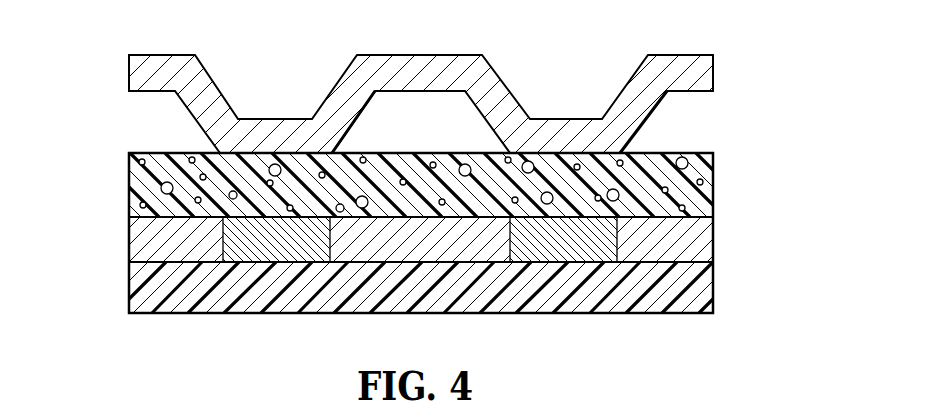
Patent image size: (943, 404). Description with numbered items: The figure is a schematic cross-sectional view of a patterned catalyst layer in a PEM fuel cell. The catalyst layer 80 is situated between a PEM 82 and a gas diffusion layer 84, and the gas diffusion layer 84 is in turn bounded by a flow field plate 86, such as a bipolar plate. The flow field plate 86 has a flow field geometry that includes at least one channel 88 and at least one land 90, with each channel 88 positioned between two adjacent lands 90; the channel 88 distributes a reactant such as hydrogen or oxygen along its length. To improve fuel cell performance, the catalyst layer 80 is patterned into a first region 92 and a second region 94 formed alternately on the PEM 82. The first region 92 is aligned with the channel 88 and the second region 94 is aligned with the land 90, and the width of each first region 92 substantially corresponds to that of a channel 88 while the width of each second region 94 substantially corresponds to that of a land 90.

The catalyst layer 80 is at (441, 285).
The PEM 82 is at (147, 288).
The gas diffusion layer 84 is at (147, 178).
The flow field plate 86 is at (715, 72).
The channel 88 is at (426, 120).
The land 90 is at (283, 118).
The first region 92 is at (178, 235).
The second region 94 is at (265, 235).